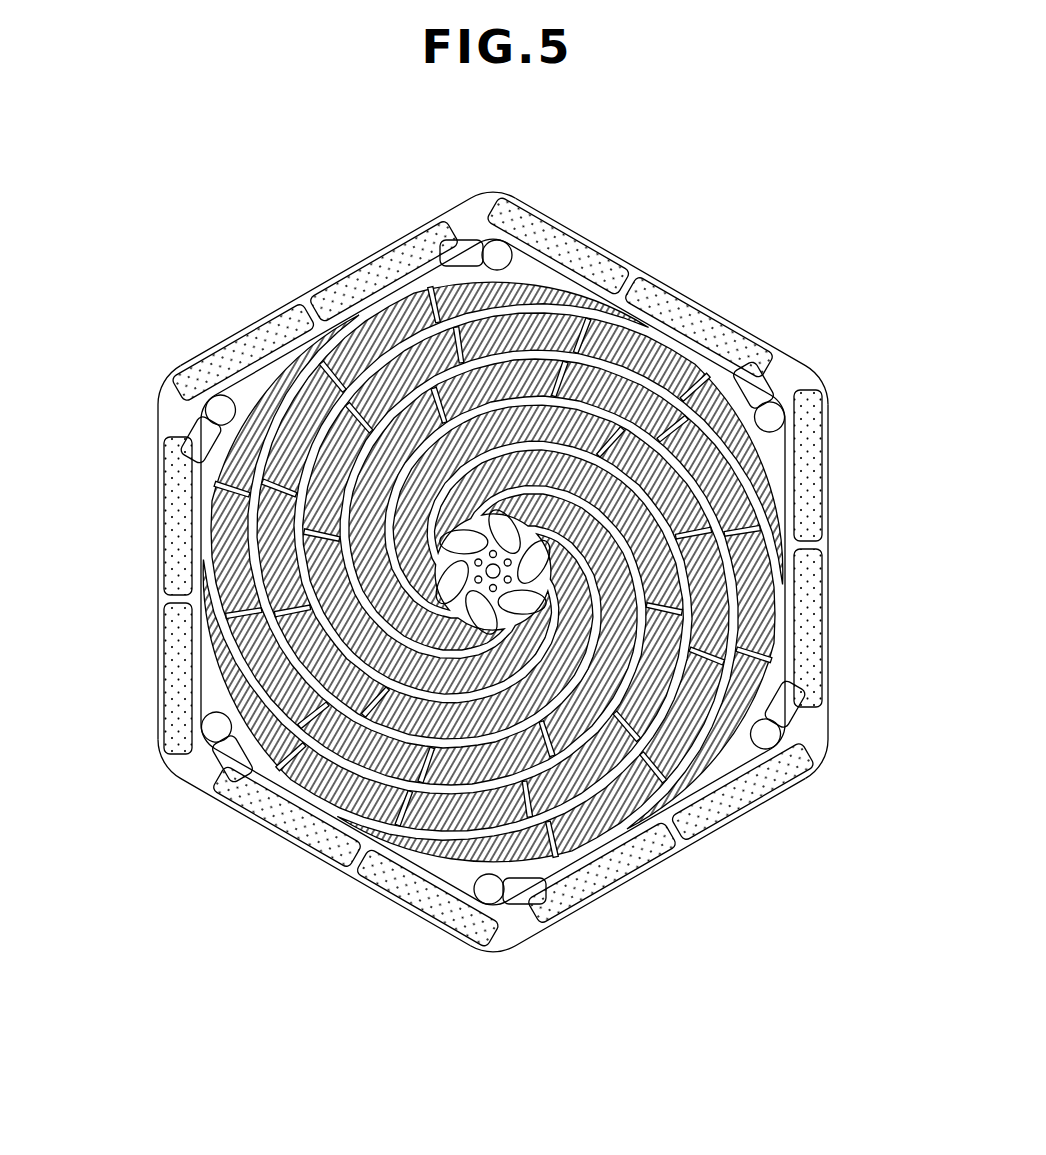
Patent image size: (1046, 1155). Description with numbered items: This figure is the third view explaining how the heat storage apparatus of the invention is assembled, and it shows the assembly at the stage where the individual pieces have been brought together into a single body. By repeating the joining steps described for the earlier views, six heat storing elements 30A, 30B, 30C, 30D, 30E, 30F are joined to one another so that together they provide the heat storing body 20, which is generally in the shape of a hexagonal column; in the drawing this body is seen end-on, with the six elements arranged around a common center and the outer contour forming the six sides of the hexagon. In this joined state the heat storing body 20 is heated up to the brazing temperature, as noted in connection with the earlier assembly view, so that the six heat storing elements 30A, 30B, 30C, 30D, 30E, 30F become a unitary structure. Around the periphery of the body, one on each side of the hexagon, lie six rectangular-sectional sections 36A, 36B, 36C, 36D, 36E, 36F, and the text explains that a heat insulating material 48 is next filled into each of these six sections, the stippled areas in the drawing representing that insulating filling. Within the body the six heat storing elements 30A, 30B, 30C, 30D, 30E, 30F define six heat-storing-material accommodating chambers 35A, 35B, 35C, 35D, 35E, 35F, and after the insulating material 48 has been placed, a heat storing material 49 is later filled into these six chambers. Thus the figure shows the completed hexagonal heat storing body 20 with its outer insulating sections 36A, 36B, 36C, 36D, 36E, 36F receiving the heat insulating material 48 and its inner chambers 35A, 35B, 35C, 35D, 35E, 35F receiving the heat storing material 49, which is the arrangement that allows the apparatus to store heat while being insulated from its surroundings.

The heat storing body 20 is at (735, 300).
The heat storing element 30A is at (213, 665).
The heat storing element 30B is at (428, 856).
The heat storing element 30C is at (745, 748).
The heat storing element 30D is at (748, 440).
The heat storing element 30E is at (597, 268).
The heat storing element 30F is at (265, 378).
The heat-storing-material accommodating chamber 35A is at (215, 625).
The heat-storing-material accommodating chamber 35B is at (322, 762).
The heat-storing-material accommodating chamber 35C is at (573, 822).
The heat-storing-material accommodating chamber 35D is at (762, 506).
The heat-storing-material accommodating chamber 35E is at (647, 374).
The heat-storing-material accommodating chamber 35F is at (418, 318).
The rectangular-sectional section 36A is at (300, 837).
The rectangular-sectional section 36B is at (660, 852).
The rectangular-sectional section 36C is at (828, 543).
The rectangular-sectional section 36D is at (682, 297).
The rectangular-sectional section 36E is at (330, 282).
The rectangular-sectional section 36F is at (163, 545).
The heat insulating material 48 is at (636, 262).
The heat storing material 49 is at (517, 282).